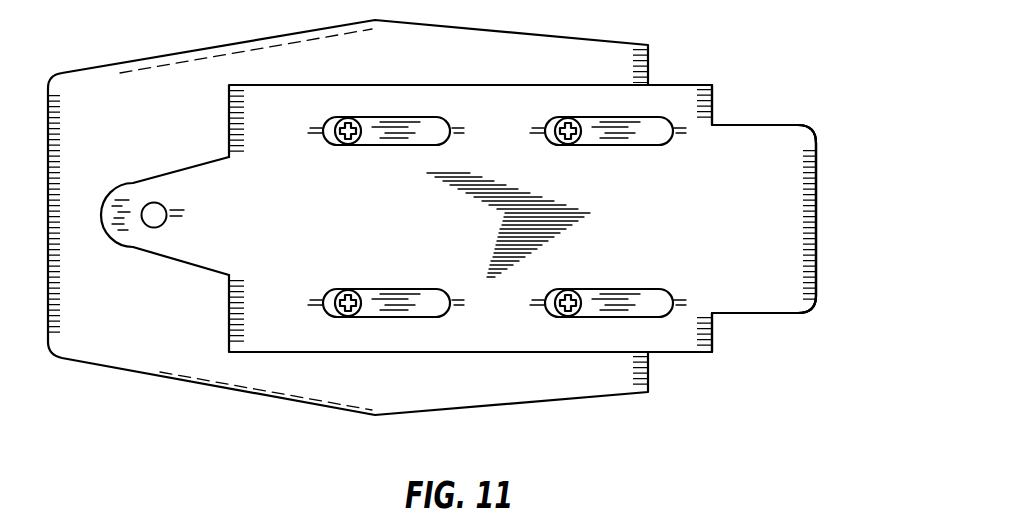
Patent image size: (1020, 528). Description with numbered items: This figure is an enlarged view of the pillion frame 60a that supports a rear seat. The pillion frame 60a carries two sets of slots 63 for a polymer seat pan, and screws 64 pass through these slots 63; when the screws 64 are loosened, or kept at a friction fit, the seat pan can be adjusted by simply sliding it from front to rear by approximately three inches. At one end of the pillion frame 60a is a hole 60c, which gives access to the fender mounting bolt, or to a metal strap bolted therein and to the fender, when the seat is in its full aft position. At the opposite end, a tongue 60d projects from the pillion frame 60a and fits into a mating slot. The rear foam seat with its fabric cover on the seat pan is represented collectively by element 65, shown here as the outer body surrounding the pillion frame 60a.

The pillion frame 60a is at (756, 334).
The hole 60c is at (153, 202).
The tongue 60d is at (816, 212).
The slots 63 is at (400, 289).
The screws 64 is at (344, 118).
The rear seat 65 is at (556, 416).